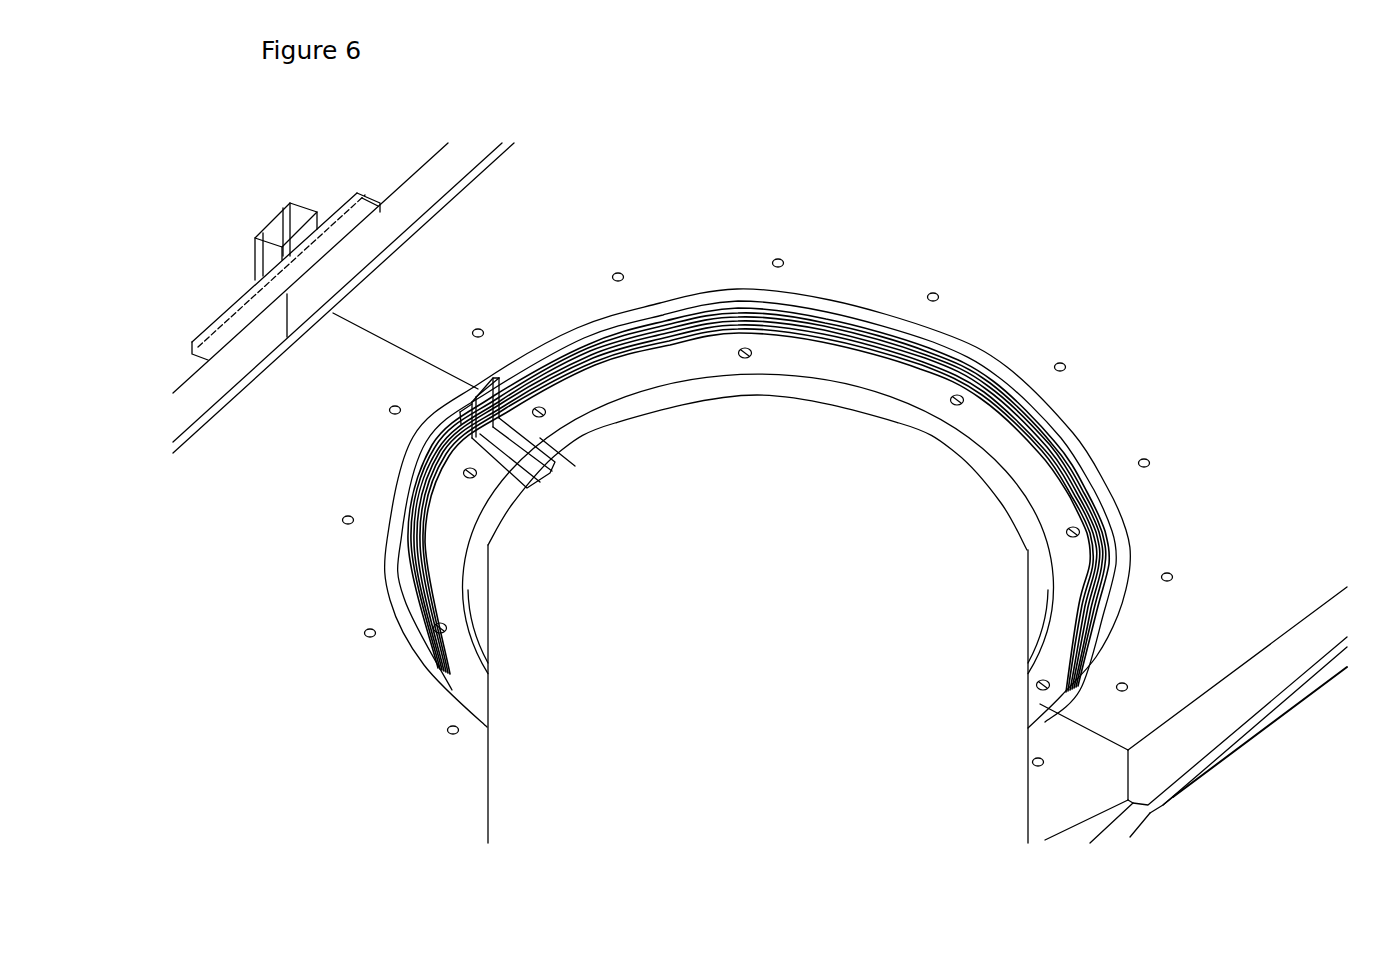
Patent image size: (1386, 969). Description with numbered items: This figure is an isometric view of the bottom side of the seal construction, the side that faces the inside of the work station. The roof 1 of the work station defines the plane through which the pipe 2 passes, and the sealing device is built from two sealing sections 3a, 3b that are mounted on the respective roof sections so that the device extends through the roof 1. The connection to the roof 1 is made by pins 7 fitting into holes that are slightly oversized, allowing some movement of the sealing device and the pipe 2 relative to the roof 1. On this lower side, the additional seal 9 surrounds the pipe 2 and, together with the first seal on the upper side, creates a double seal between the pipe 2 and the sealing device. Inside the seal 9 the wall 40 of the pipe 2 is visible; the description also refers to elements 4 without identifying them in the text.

The roof 1 is at (188, 400).
The pipe 2 is at (510, 825).
The sealing section 3a is at (277, 625).
The sealing section 3b is at (1221, 514).
The clamp 4 is at (271, 232).
The pin 7 is at (1151, 463).
The additional seal 9 is at (785, 400).
The wall 40 is at (762, 705).